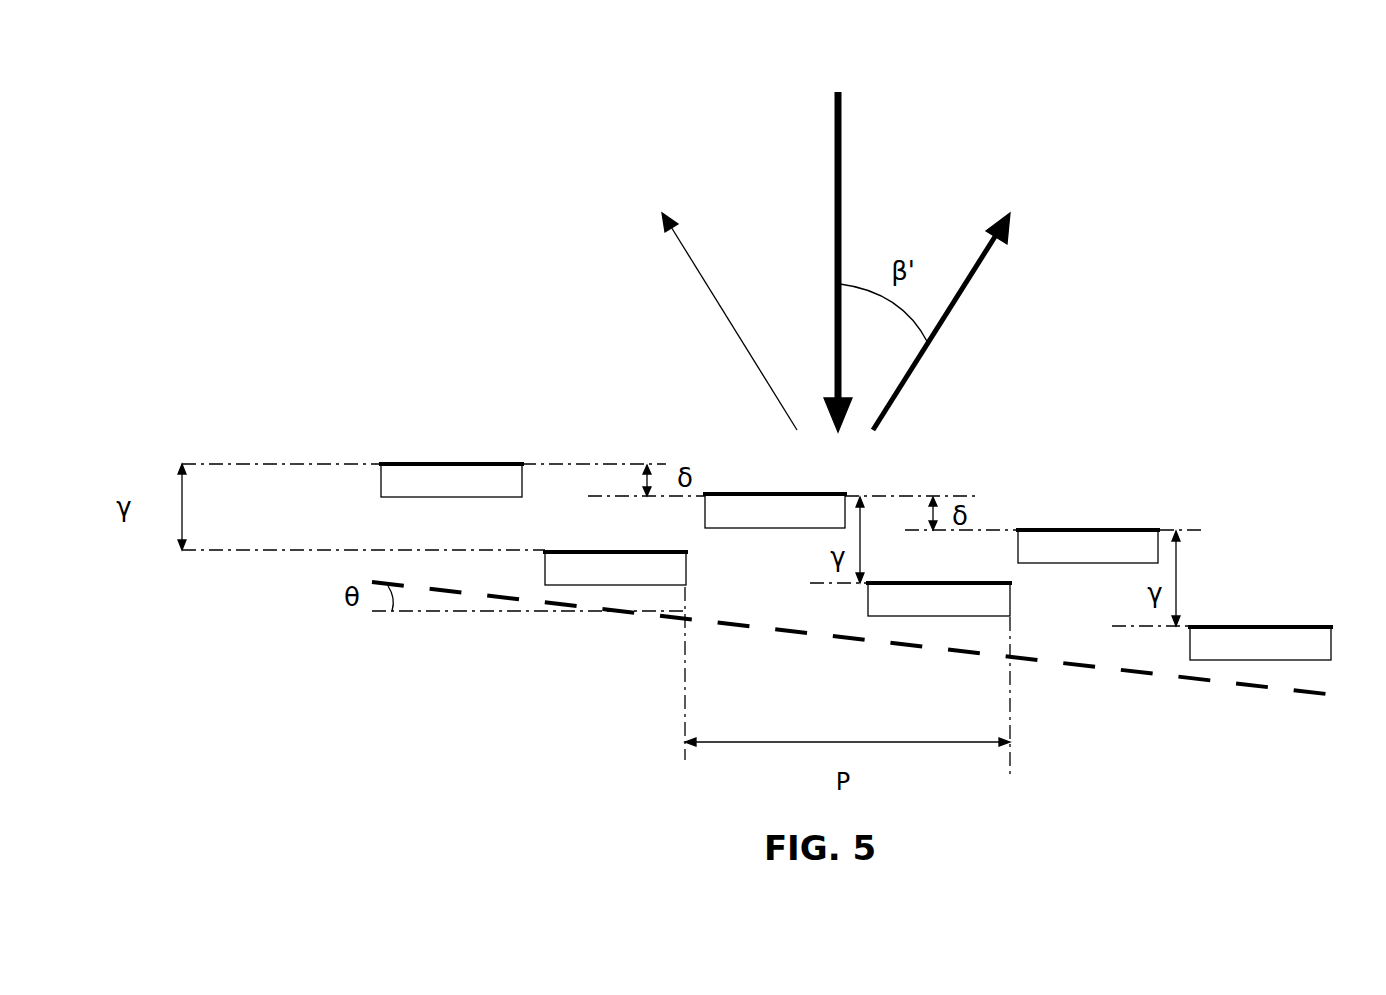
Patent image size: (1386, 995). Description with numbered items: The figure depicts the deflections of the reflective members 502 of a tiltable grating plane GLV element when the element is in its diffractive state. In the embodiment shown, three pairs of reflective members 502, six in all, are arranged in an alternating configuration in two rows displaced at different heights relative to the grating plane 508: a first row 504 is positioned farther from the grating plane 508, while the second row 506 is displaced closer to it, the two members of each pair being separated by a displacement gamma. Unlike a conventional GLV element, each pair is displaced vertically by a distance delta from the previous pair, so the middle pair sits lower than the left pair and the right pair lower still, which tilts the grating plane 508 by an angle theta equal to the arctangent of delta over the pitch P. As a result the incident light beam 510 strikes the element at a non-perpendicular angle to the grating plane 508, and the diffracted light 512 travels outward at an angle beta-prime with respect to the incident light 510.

The reflective members 502 is at (452, 462).
The first row 504 is at (1016, 530).
The second row 506 is at (1335, 627).
The grating plane 508 is at (1150, 676).
The incident light beam 510 is at (835, 218).
The diffracted light 512 is at (972, 292).